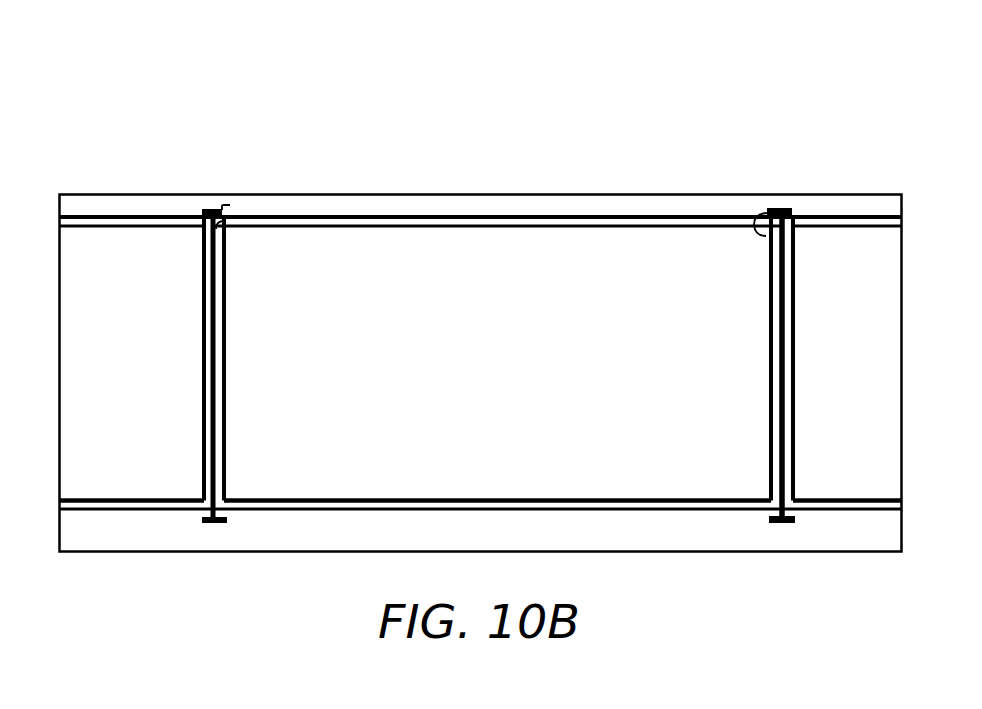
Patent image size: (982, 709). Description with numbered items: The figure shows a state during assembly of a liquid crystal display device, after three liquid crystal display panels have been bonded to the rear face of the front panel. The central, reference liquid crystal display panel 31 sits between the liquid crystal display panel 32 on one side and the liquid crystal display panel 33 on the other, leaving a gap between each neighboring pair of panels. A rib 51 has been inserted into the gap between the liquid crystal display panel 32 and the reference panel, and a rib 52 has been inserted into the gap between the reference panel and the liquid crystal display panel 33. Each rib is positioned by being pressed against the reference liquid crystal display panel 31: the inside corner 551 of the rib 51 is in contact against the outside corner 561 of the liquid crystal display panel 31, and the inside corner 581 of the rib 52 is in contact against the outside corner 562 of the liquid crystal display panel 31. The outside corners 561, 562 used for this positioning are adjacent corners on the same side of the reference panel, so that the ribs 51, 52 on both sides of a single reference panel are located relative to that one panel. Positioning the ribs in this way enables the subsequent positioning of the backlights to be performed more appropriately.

The liquid crystal display panel 31 is at (497, 376).
The liquid crystal display panel 32 is at (113, 374).
The liquid crystal display panel 33 is at (833, 374).
The rib 51 is at (208, 209).
The rib 52 is at (785, 208).
The inside corner 551 is at (294, 132).
The outside corner 561 is at (238, 214).
The inside corner 581 is at (682, 128).
The outside corner 562 is at (762, 213).